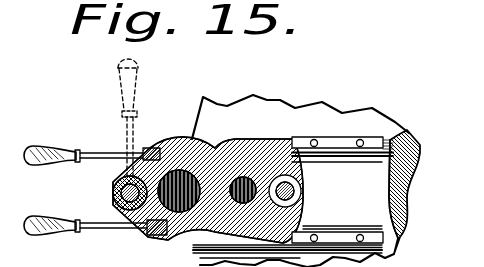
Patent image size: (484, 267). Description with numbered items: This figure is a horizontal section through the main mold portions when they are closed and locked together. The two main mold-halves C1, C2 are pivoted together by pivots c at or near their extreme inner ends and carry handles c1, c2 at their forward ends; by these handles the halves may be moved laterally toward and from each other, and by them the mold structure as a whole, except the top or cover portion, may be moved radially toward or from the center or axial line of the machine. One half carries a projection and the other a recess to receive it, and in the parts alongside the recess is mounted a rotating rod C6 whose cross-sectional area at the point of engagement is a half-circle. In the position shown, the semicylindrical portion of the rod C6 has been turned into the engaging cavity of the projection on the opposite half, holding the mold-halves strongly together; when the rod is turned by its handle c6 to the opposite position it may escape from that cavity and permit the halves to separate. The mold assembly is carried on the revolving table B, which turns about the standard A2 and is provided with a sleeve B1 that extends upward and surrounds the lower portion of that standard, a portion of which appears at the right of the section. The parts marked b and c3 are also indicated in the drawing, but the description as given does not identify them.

The housing head C1 is at (182, 137).
The lower housing block C2 is at (167, 240).
The rotating rod C6 is at (118, 198).
The pivots c is at (297, 187).
The handle c1 is at (49, 150).
The handle c2 is at (37, 222).
The lower part c3 is at (84, 264).
The handle c6 is at (124, 105).
The table B is at (314, 118).
The plates b is at (356, 140).
The sleeve B1 is at (388, 180).
The standard A2 is at (390, 200).